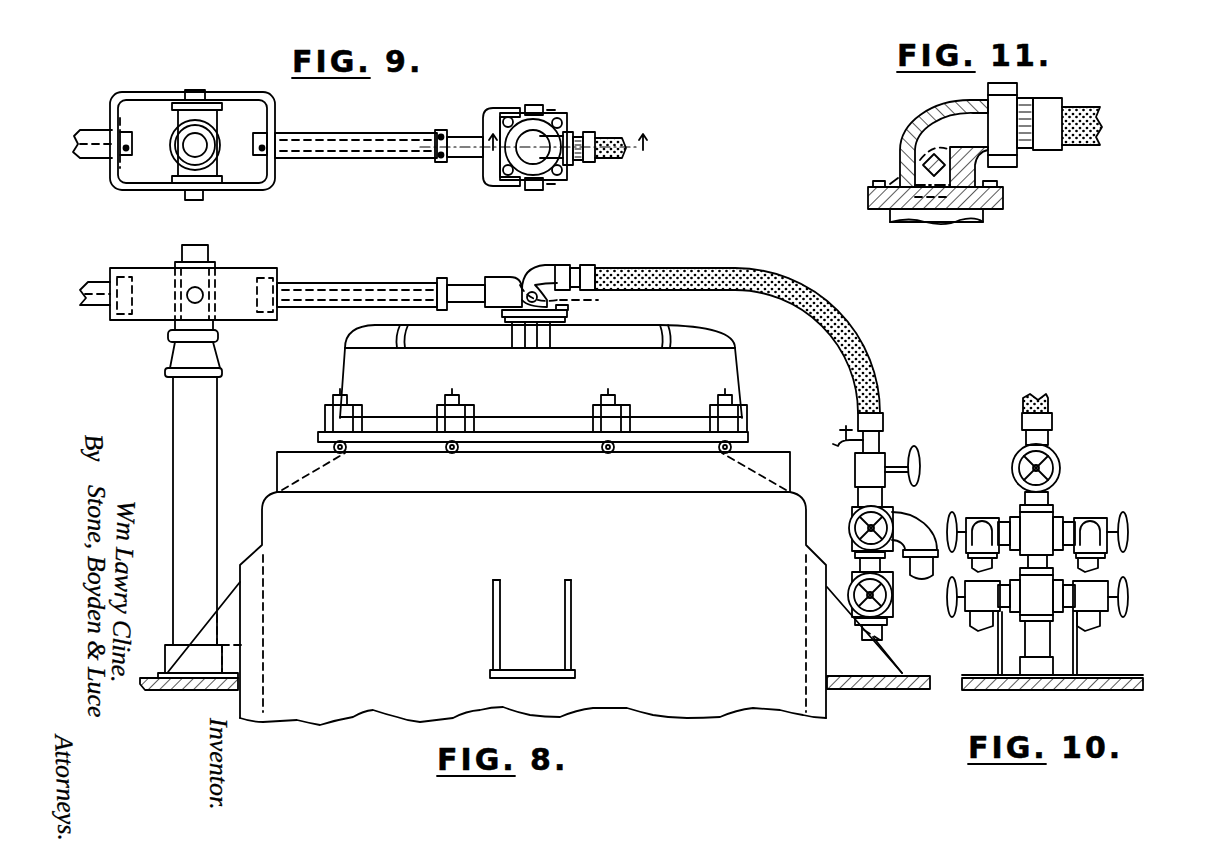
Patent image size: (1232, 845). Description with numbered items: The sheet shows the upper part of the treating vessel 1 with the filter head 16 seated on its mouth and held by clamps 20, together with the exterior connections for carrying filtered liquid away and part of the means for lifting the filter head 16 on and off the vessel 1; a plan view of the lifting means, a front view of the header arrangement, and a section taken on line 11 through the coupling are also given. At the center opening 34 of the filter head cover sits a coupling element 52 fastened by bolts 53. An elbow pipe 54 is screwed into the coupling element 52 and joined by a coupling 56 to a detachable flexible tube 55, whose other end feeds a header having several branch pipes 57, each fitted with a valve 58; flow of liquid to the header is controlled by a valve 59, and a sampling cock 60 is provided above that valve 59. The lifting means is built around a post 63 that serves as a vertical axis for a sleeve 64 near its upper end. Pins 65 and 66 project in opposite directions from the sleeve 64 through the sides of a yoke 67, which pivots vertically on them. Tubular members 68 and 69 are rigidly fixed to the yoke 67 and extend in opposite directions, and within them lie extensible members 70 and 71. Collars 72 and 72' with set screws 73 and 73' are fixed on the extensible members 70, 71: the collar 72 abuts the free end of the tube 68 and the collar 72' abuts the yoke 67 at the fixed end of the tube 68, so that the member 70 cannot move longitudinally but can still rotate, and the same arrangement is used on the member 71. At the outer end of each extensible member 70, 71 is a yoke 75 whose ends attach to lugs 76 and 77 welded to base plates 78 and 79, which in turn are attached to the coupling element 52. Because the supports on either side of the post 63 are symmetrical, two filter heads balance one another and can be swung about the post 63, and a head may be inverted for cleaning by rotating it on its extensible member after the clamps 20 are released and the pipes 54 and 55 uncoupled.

In FIG. 8, the treating vessel 1 is at (748, 698).
In FIG. 9, the section line 11— 11 is at (540, 127).
In FIG. 8, the filter head 16 is at (712, 372).
In FIG. 8, the clamps 20 is at (440, 406).
In FIG. 11, the center opening 34 is at (924, 222).
In FIG. 11, the coupling element 52 is at (1005, 203).
In FIG. 8, the coupling element 52 is at (502, 316).
In FIG. 9, the bolts 53 is at (528, 104).
In FIG. 11, the bolts 53 is at (995, 184).
In FIG. 9, the elbow pipe 54 is at (533, 152).
In FIG. 11, the elbow pipe 54 is at (925, 128).
In FIG. 8, the elbow pipe 54 is at (546, 267).
In FIG. 9, the detachable flexible tube 55 is at (620, 158).
In FIG. 11, the detachable flexible tube 55 is at (1092, 115).
In FIG. 10, the detachable flexible tube 55 is at (1046, 402).
In FIG. 8, the detachable flexible tube 55 is at (692, 268).
In FIG. 9, the coupling 56 is at (591, 132).
In FIG. 11, the coupling 56 is at (1048, 104).
In FIG. 8, the coupling 56 is at (588, 264).
In FIG. 10, the branch pipes 57 is at (983, 525).
In FIG. 8, the branch pipes 57 is at (917, 580).
In FIG. 10, the valve 58 is at (950, 514).
In FIG. 8, the valve 58 is at (852, 530).
In FIG. 10, the valve 59 is at (1060, 468).
In FIG. 8, the valve 59 is at (917, 456).
In FIG. 10, the sampling cock 60 is at (1052, 428).
In FIG. 8, the sampling cock 60 is at (833, 442).
In FIG. 8, the post 63 is at (208, 440).
In FIG. 9, the sleeve 64 is at (178, 150).
In FIG. 8, the sleeve 64 is at (208, 271).
In FIG. 9, the pin 65 is at (195, 92).
In FIG. 9, the pin 66 is at (190, 198).
In FIG. 8, the pin 66 is at (172, 322).
In FIG. 9, the yoke 67 is at (128, 188).
In FIG. 8, the yoke 67 is at (246, 286).
In FIG. 9, the tubular member 68 is at (350, 140).
In FIG. 8, the tubular member 68 is at (372, 283).
In FIG. 9, the tubular member 69 is at (84, 130).
In FIG. 8, the tubular member 69 is at (95, 306).
In FIG. 9, the extensible member 70 is at (468, 158).
In FIG. 8, the extensible member 70 is at (468, 285).
In FIG. 9, the extensible member 71 is at (134, 143).
In FIG. 9, the collar 72 is at (422, 163).
In FIG. 8, the collar 72 is at (434, 270).
In FIG. 9, the collar 72' is at (174, 113).
In FIG. 8, the collar 72' is at (191, 322).
In FIG. 9, the set screw 73 is at (426, 127).
In FIG. 9, the set screw 73' is at (167, 174).
In FIG. 9, the yoke 75 is at (492, 114).
In FIG. 8, the yoke 75 is at (506, 277).
In FIG. 9, the lug 76 is at (552, 116).
In FIG. 11, the lug 76 is at (918, 150).
In FIG. 9, the lug 77 is at (545, 188).
In FIG. 8, the lug 77 is at (595, 298).
In FIG. 9, the base plate 78 is at (568, 130).
In FIG. 11, the base plate 78 is at (875, 188).
In FIG. 9, the base plate 79 is at (563, 178).
In FIG. 8, the base plate 79 is at (570, 308).